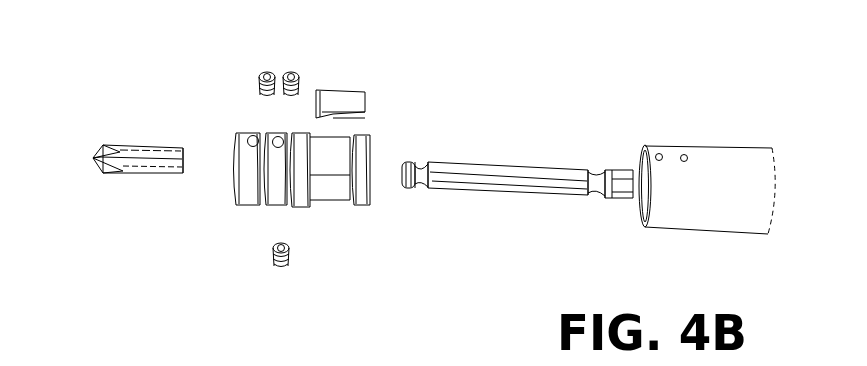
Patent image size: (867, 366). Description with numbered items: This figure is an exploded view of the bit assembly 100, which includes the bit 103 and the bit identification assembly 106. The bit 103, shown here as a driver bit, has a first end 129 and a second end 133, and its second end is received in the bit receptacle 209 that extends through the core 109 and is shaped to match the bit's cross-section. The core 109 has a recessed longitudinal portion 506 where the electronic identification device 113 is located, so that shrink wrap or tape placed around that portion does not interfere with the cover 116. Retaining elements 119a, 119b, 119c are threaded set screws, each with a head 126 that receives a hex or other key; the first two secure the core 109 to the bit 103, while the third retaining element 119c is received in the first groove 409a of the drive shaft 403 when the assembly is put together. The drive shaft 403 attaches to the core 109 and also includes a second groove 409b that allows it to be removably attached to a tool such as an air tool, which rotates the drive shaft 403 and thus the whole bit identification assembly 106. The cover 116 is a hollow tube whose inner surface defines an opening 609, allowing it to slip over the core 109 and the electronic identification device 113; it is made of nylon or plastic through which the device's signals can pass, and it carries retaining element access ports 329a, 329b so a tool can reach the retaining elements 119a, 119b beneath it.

The bit assembly 100 is at (117, 108).
The bit 103 is at (139, 192).
The first end 129 is at (93, 159).
The second end 133 is at (184, 171).
The core 109 is at (283, 218).
The bit receptacle 209 is at (232, 168).
The longitudinal portion 506 is at (318, 195).
The head 126 is at (233, 57).
The retaining element 119a is at (267, 72).
The retaining element 119b is at (289, 71).
The retaining element 119c is at (275, 263).
The electronic identification device 113 is at (338, 103).
The bit identification assembly 106 is at (443, 83).
The drive shaft 403 is at (517, 180).
The first groove 409a is at (420, 170).
The second groove 409b is at (598, 180).
The cover 116 is at (686, 155).
The opening 609 is at (645, 197).
The retaining element access port 329a is at (661, 153).
The retaining element access port 329b is at (689, 154).